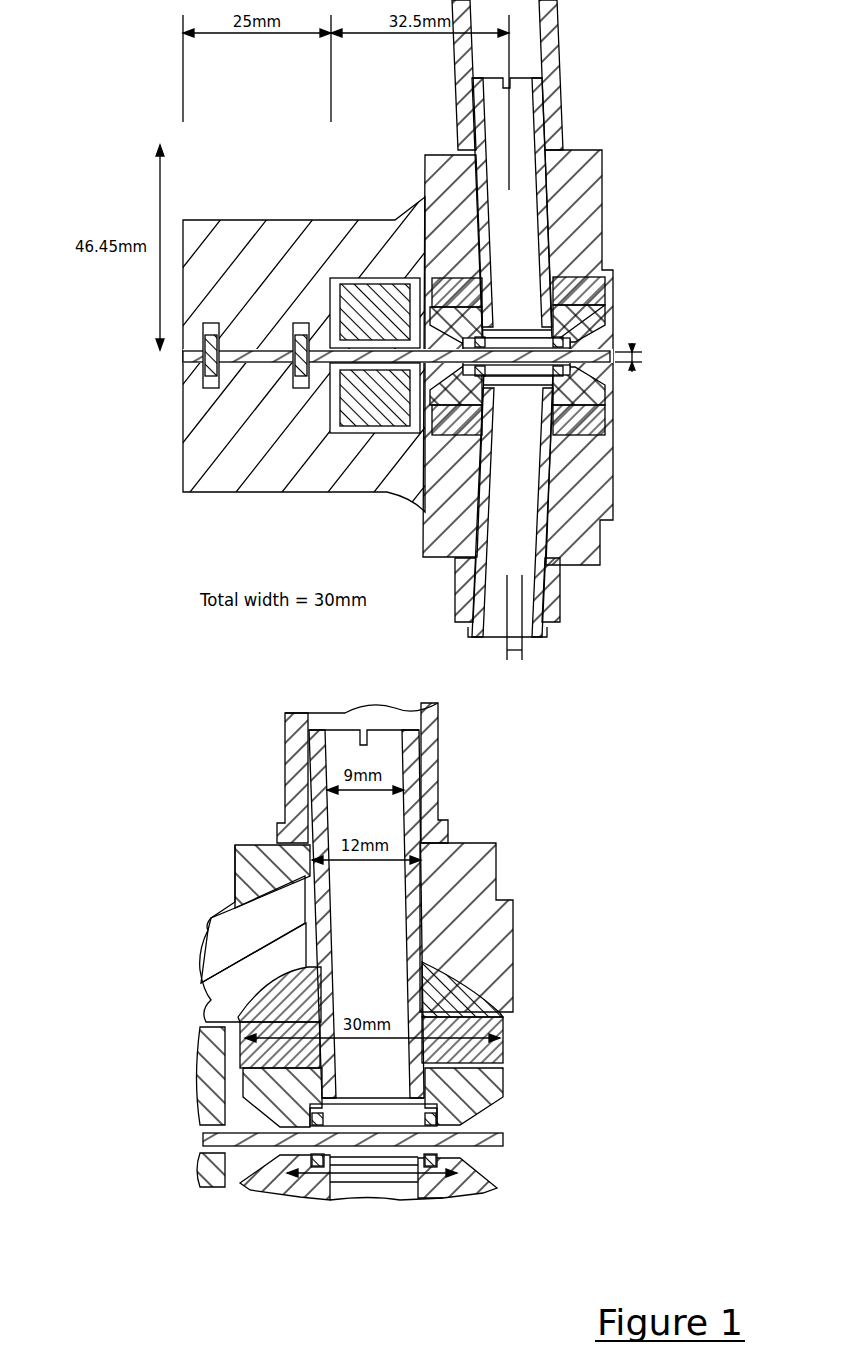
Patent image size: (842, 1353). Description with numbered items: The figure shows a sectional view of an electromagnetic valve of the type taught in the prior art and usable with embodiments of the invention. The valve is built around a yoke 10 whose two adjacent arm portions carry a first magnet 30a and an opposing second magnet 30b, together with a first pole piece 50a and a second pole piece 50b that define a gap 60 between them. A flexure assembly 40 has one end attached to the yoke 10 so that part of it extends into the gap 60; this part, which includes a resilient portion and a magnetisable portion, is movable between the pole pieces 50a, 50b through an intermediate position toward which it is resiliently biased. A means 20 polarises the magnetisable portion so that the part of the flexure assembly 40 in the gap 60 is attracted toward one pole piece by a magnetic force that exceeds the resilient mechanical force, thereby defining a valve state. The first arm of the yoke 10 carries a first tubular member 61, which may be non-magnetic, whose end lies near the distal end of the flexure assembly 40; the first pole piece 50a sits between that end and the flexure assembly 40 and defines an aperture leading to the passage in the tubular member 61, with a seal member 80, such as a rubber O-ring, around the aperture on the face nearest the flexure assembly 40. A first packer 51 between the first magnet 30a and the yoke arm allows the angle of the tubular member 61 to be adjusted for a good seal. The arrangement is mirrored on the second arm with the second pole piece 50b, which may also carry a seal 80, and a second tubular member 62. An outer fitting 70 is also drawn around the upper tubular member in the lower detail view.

The yoke 10 is at (595, 213).
The means for polarising the magnetisable portion 20 is at (375, 432).
The first magnet 30a is at (605, 285).
The second magnet 30b is at (605, 428).
The flexure assembly 40 is at (612, 352).
The first pole piece 50a is at (605, 312).
The second pole piece 50b is at (605, 400).
The first packer 51 is at (430, 985).
The gap 60 is at (383, 1150).
The first tubular member 61 is at (563, 113).
The second tubular member 62 is at (560, 583).
The outer fitting 70 is at (440, 788).
The seal member 80 is at (500, 1095).